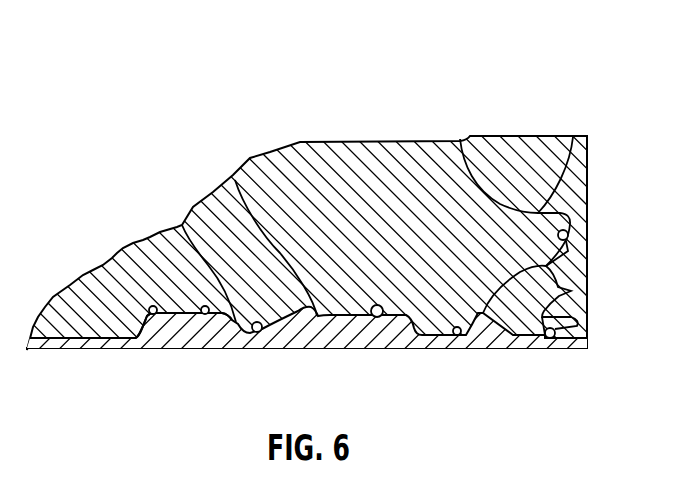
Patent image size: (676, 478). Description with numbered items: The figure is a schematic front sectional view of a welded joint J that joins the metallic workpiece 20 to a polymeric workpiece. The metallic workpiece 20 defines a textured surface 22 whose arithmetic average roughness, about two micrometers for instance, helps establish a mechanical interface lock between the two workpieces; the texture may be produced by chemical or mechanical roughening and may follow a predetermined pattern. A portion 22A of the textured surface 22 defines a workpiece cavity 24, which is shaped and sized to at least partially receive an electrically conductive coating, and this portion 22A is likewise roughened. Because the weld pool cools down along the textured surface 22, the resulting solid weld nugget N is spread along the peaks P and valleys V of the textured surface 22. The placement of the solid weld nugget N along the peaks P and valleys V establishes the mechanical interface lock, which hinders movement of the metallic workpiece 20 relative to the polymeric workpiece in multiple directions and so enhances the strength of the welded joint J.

The welded joint J is at (242, 81).
The metallic workpiece 20 is at (408, 337).
The textured surface 22 is at (145, 318).
The portion of the textured surface 22A is at (198, 315).
The workpiece cavity 24 is at (373, 318).
The valleys V is at (266, 332).
The peaks P is at (182, 225).
The solid weld nugget N is at (503, 187).